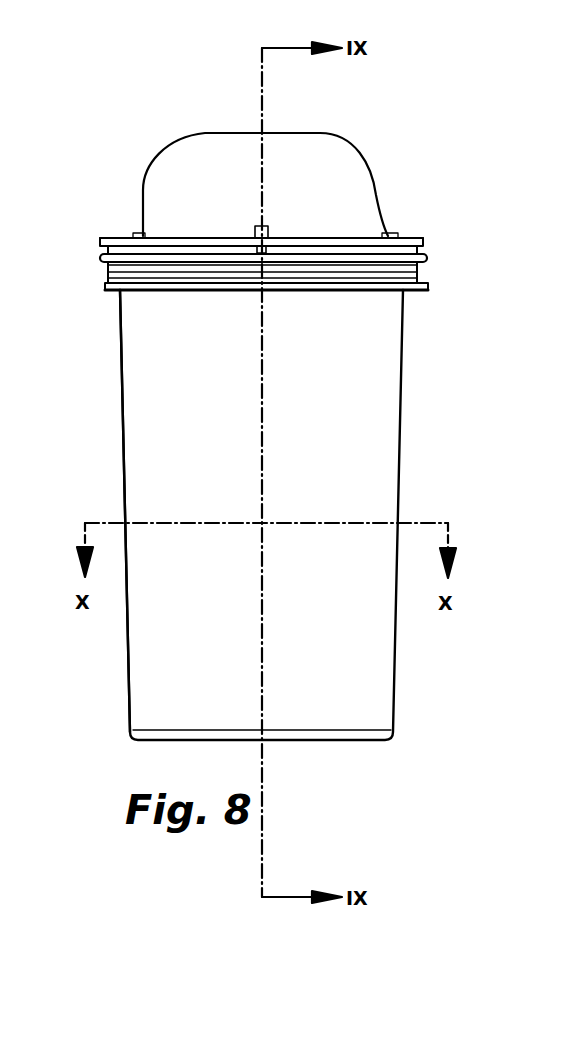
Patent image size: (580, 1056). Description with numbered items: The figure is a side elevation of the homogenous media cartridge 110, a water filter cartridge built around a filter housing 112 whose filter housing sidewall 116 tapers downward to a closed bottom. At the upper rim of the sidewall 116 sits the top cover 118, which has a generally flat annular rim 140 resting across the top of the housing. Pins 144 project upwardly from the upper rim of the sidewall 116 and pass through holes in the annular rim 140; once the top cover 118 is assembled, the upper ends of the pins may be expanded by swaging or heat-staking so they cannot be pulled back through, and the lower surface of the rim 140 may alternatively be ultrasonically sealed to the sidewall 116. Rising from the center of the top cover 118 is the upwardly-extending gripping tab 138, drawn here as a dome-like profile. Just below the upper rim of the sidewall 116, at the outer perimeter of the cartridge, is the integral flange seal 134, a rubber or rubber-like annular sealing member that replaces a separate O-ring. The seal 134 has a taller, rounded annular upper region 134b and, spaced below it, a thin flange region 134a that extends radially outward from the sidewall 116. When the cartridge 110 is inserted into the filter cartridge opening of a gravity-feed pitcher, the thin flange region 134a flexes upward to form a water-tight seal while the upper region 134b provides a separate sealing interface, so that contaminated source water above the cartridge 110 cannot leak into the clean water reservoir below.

The homogenous media cartridge 110 is at (394, 146).
The filter housing 112 is at (124, 455).
The filter housing sidewall 116 is at (138, 393).
The top cover 118 is at (144, 188).
The integral flange seal 134 is at (92, 271).
The thin flange region 134a is at (97, 284).
The rounded annular upper region 134b is at (99, 259).
The gripping tab 138 is at (191, 141).
The annular rim 140 is at (108, 238).
The pins 144 is at (272, 228).